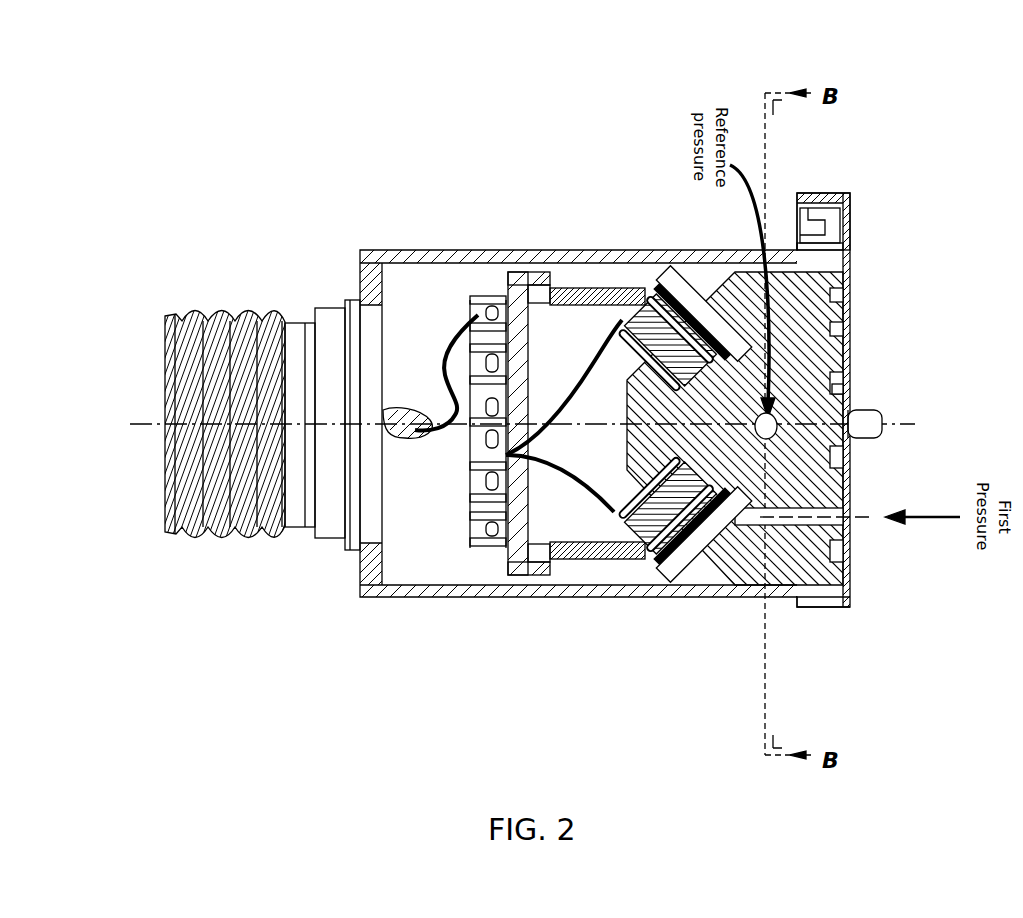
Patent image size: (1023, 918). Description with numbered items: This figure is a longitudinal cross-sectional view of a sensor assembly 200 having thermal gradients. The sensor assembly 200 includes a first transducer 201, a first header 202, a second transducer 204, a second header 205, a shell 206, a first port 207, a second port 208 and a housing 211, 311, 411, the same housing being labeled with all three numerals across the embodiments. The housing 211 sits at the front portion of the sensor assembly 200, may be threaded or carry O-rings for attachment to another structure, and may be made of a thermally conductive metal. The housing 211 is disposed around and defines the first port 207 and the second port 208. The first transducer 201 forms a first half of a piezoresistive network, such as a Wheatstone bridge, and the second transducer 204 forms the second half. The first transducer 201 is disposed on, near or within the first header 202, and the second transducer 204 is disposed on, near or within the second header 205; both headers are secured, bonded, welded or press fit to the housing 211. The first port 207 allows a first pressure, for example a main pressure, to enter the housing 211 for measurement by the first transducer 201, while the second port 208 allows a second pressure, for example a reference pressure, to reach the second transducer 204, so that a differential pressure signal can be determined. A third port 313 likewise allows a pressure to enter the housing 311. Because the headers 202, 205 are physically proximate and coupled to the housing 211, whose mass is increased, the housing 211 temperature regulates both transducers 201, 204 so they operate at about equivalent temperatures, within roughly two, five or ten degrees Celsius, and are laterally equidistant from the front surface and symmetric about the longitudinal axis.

The sensor assembly 200 is at (553, 41).
The first transducer 201 is at (698, 492).
The first header 202 is at (690, 568).
The second transducer 204 is at (698, 353).
The second header 205 is at (682, 265).
The shell 206 is at (522, 590).
The first port 207 is at (848, 532).
The second port 208 is at (840, 390).
The housing 211 is at (846, 262).
The housing 311 is at (871, 228).
The housing 411 is at (870, 259).
The third port 313 is at (774, 435).